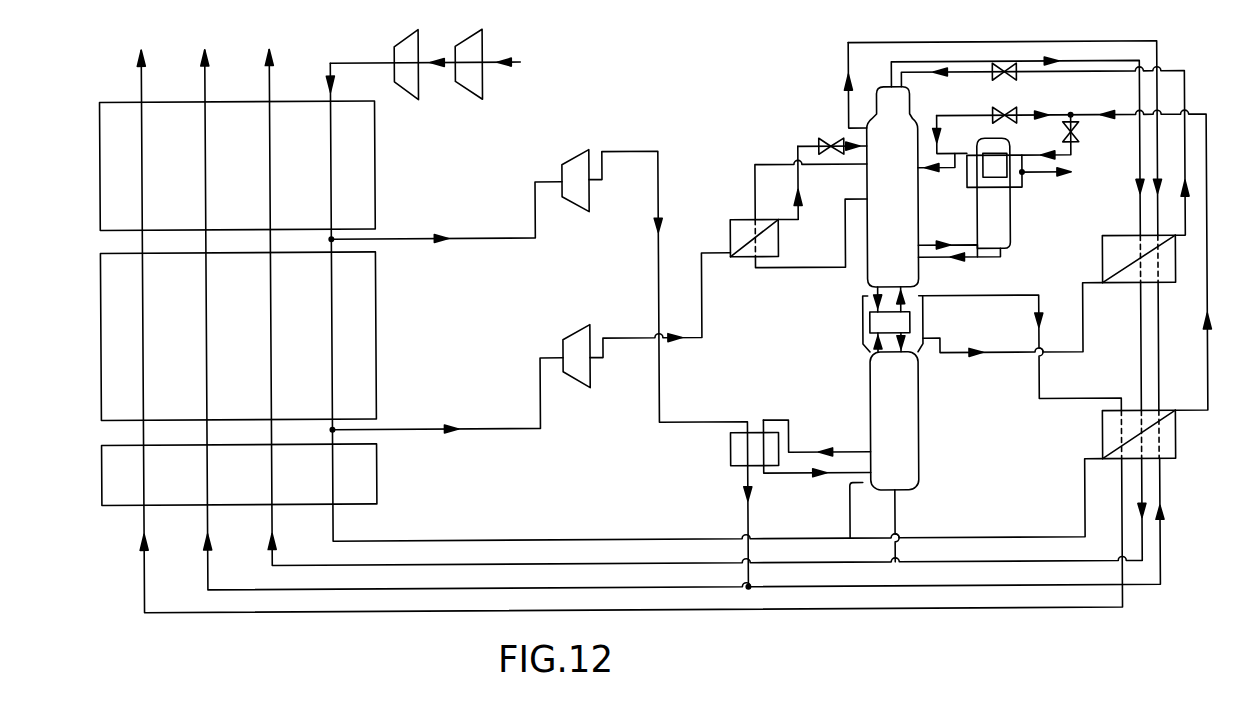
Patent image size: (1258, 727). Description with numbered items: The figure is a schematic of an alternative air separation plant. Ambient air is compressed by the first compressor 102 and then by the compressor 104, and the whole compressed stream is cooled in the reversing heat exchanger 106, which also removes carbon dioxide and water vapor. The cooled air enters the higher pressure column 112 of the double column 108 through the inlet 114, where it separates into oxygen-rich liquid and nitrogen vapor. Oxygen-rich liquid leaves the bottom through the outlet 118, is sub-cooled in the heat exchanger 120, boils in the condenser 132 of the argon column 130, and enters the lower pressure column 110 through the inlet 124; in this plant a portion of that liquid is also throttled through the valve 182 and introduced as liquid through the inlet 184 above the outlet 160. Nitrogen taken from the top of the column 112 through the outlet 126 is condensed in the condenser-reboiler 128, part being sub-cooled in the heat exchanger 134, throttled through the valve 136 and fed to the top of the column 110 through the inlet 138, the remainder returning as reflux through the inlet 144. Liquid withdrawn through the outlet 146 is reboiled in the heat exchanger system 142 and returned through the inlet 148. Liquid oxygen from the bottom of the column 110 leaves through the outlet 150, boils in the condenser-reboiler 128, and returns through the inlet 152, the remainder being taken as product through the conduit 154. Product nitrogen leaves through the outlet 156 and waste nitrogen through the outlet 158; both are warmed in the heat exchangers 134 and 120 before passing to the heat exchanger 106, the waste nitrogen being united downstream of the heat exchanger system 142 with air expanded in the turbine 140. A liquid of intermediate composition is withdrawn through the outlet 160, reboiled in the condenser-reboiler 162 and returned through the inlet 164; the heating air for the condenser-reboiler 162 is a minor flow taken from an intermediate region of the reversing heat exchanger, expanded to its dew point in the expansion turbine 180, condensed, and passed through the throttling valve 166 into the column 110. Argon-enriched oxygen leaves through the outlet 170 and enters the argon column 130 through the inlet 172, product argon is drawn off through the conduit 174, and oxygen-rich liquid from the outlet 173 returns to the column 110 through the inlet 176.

The first compressor 102 is at (470, 78).
The compressor 104 is at (408, 78).
The reversing heat exchanger 106 is at (400, 343).
The double column 108 is at (838, 341).
The lower pressure column 110 is at (906, 246).
The higher pressure column 112 is at (907, 434).
The inlet 114 is at (852, 489).
The outlet 118 is at (899, 502).
The heat exchanger 120 is at (1178, 449).
The inlet 124 is at (1082, 137).
The outlet 126 is at (876, 343).
The condenser-reboiler 128 is at (870, 323).
The argon column 130 is at (1002, 216).
The condenser 132 is at (999, 158).
The heat exchanger 134 is at (1178, 275).
The throttling valve 136 is at (1009, 64).
The inlet 138 is at (906, 85).
The expansion turbine 140 is at (574, 167).
The heat exchanger system 142 is at (730, 451).
The inlet 144 is at (908, 348).
The outlet 146 is at (853, 451).
The inlet 148 is at (792, 476).
The outlet 150 is at (863, 298).
The inlet 152 is at (908, 306).
The conduit 154 is at (1016, 301).
The outlet 156 is at (897, 84).
The outlet 158 is at (850, 128).
The outlet 160 is at (867, 171).
The condenser-reboiler 162 is at (741, 220).
The inlet 164 is at (867, 203).
The throttling valve 166 is at (818, 142).
The outlet 170 is at (922, 246).
The inlet 172 is at (982, 261).
The outlet 173 is at (1004, 254).
The conduit 174 is at (1045, 178).
The inlet 176 is at (929, 263).
The expansion turbine 180 is at (571, 347).
The throttling valve 182 is at (1017, 109).
The inlet 184 is at (923, 162).